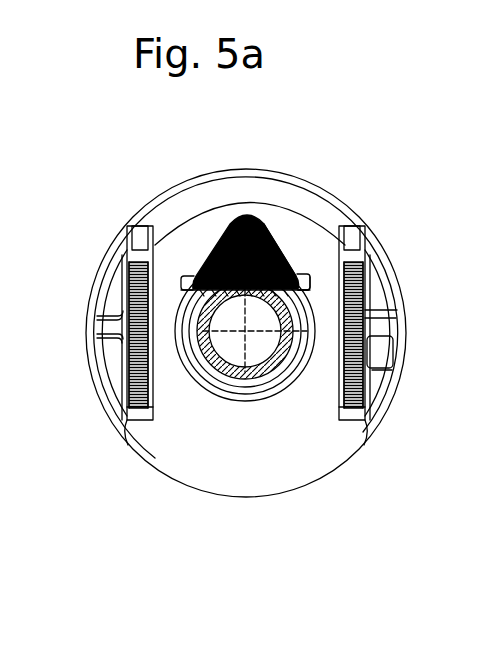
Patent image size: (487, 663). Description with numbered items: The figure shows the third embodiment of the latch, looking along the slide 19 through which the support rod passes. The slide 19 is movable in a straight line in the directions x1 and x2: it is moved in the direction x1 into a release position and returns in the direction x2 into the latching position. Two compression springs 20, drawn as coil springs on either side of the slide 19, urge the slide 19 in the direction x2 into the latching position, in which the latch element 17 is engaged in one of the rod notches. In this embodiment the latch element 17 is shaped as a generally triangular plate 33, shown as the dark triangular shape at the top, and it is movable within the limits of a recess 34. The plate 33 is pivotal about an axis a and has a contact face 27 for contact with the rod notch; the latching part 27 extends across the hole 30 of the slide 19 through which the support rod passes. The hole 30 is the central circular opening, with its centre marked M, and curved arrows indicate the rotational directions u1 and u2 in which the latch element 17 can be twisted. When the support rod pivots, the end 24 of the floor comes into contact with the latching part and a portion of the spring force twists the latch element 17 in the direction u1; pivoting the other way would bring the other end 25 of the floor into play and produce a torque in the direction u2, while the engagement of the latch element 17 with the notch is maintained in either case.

The latch element 17 is at (196, 250).
The slide 19 is at (288, 458).
The compression springs 20 is at (405, 311).
The end of the floor 24 is at (178, 318).
The end of the floor 25 is at (345, 422).
The contact face 27 is at (300, 345).
The hole 30 is at (235, 408).
The generally triangular plate 33 is at (276, 248).
The recess 34 is at (304, 276).
The axis a is at (266, 218).
The center point M is at (244, 332).
The direction u1 is at (176, 424).
The direction u2 is at (312, 421).
The direction x1 is at (37, 244).
The direction x2 is at (37, 335).